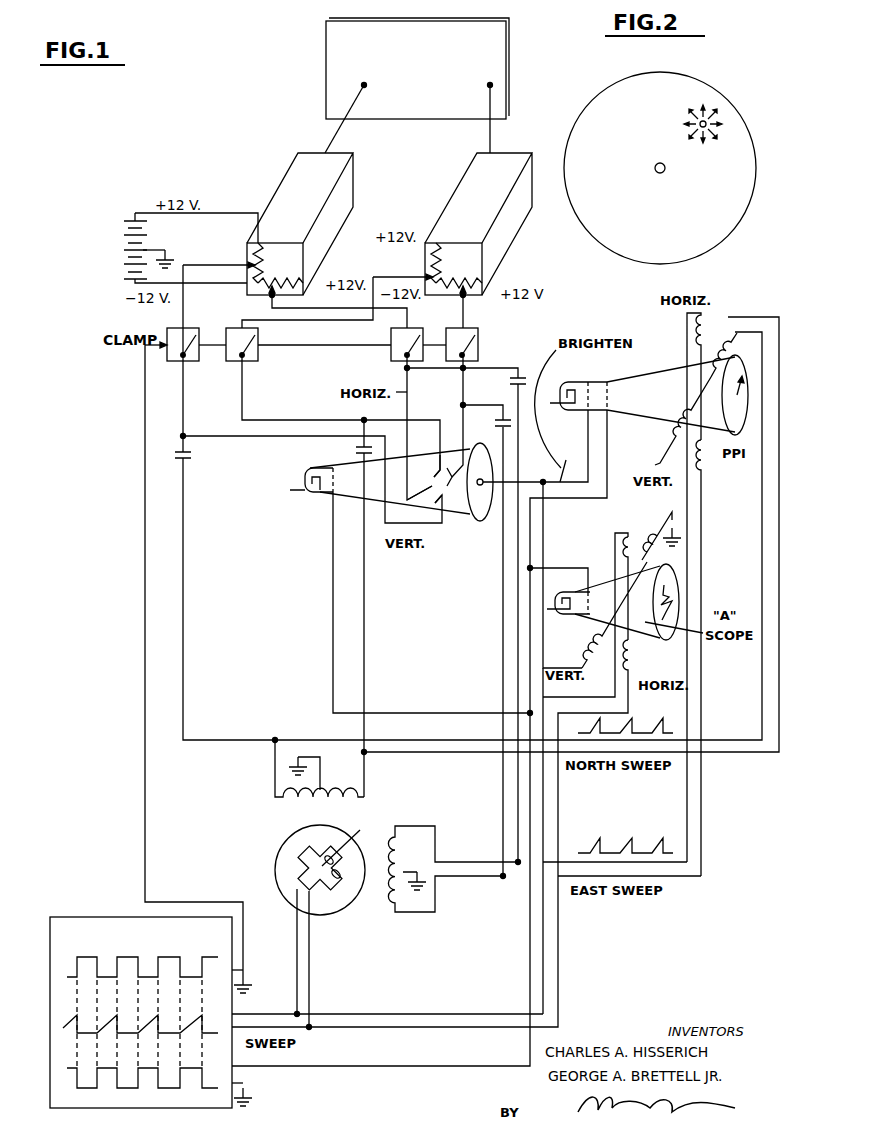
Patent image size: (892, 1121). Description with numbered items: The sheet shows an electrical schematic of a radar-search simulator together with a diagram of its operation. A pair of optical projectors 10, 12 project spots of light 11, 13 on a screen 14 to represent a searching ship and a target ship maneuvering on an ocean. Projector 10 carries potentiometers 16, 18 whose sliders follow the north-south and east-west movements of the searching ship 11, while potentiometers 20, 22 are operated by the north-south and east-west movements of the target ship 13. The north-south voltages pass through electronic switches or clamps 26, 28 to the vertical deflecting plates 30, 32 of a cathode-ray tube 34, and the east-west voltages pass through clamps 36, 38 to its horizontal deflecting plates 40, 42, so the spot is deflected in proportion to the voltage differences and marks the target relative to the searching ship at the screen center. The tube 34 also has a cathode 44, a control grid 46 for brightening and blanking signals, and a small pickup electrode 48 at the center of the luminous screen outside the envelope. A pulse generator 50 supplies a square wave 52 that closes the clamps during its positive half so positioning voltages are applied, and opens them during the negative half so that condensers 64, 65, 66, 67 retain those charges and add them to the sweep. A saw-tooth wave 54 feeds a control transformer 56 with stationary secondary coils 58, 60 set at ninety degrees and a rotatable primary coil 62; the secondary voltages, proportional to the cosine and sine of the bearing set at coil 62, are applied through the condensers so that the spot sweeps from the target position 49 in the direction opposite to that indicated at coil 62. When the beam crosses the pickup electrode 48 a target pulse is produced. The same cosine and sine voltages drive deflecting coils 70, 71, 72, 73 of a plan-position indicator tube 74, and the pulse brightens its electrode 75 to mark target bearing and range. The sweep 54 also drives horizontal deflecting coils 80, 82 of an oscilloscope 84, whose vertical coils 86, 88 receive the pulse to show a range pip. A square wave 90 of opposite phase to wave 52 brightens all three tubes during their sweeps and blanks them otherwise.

In FIG. 1, the optical projector 10 is at (300, 178).
In FIG. 1, the spot of light 11 is at (367, 85).
In FIG. 1, the optical projector 12 is at (472, 180).
In FIG. 1, the spot of light 13 is at (488, 84).
In FIG. 1, the screen 14 is at (325, 62).
In FIG. 1, the potentiometer 16 is at (266, 265).
In FIG. 1, the potentiometer 18 is at (295, 280).
In FIG. 1, the potentiometer 20 is at (431, 258).
In FIG. 1, the potentiometer 22 is at (470, 283).
In FIG. 1, the electronic switch 26 is at (188, 337).
In FIG. 1, the electronic switch 28 is at (256, 350).
In FIG. 1, the vertical deflecting plate 30 is at (438, 465).
In FIG. 1, the vertical deflecting plate 32 is at (443, 502).
In FIG. 1, the cathode-ray tube 34 is at (490, 458).
In FIG. 2, the cathode-ray tube 34 is at (726, 244).
In FIG. 1, the electronic switch 36 is at (392, 352).
In FIG. 1, the electronic switch 38 is at (479, 345).
In FIG. 1, the horizontal deflecting plate 40 is at (428, 489).
In FIG. 1, the horizontal deflecting plate 42 is at (451, 481).
In FIG. 1, the cathode 44 is at (304, 492).
In FIG. 1, the control grid 46 is at (331, 485).
In FIG. 1, the pickup electrode 48 is at (484, 482).
In FIG. 2, the pickup electrode 48 is at (664, 173).
In FIG. 2, the target position 49 is at (716, 121).
In FIG. 1, the pulse generator 50 is at (126, 998).
In FIG. 1, the square wave 52 is at (68, 975).
In FIG. 1, the saw-tooth voltage wave 54 is at (63, 1027).
In FIG. 1, the control transformer 56 is at (306, 916).
In FIG. 1, the secondary coil 58 is at (292, 801).
In FIG. 1, the secondary coil 60 is at (395, 914).
In FIG. 1, the rotatable primary coil 62 is at (341, 893).
In FIG. 1, the condenser 64 is at (178, 457).
In FIG. 1, the condenser 65 is at (348, 608).
In FIG. 1, the condenser 66 is at (509, 382).
In FIG. 1, the condenser 67 is at (495, 424).
In FIG. 1, the deflecting coil 70 is at (704, 314).
In FIG. 1, the deflecting coil 71 is at (703, 470).
In FIG. 1, the deflecting coil 72 is at (657, 440).
In FIG. 1, the deflecting coil 73 is at (724, 330).
In FIG. 1, the plan-position indicator tube 74 is at (746, 376).
In FIG. 1, the brightening electrode 75 is at (589, 394).
In FIG. 1, the horizontal deflecting coil 80 is at (638, 657).
In FIG. 1, the horizontal deflecting coil 82 is at (623, 548).
In FIG. 1, the oscilloscope 84 is at (676, 578).
In FIG. 1, the vertical coil 86 is at (591, 649).
In FIG. 1, the vertical coil 88 is at (653, 540).
In FIG. 1, the square wave voltage 90 is at (68, 1085).